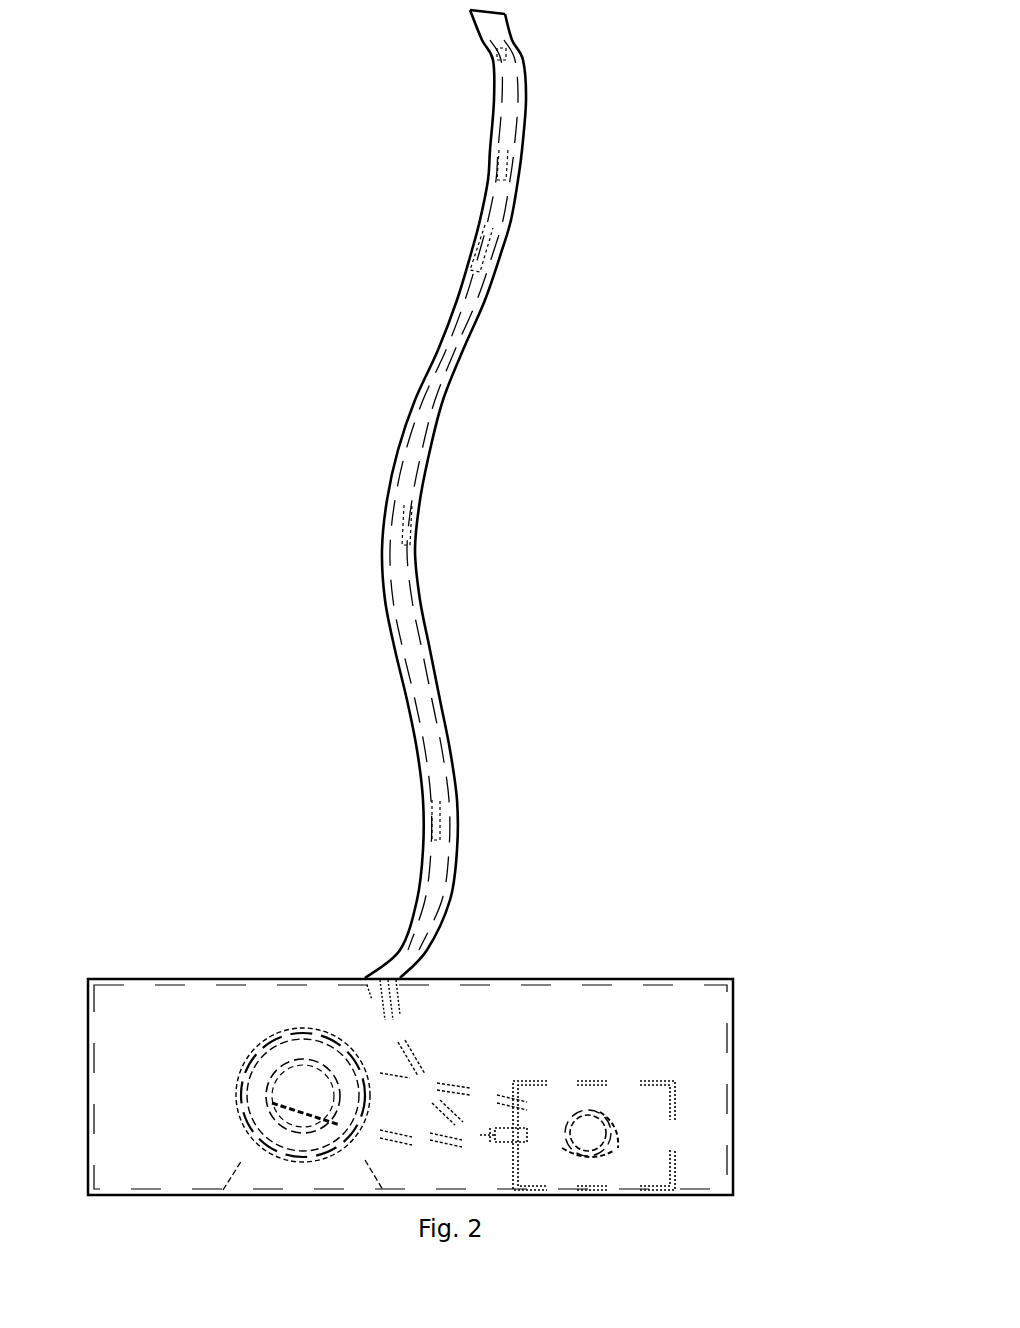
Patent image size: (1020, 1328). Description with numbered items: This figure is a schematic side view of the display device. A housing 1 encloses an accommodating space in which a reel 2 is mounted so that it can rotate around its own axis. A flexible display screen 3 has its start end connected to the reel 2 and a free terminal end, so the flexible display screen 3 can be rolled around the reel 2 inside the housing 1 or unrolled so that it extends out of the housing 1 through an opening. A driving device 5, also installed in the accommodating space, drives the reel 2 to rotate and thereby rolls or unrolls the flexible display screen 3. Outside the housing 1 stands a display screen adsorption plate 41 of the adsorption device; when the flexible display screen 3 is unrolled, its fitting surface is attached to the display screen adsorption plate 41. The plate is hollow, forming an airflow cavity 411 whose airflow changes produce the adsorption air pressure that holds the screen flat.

The housing 1 is at (530, 1005).
The reel 2 is at (275, 1063).
The flexible display screen 3 is at (478, 215).
The driving device 5 is at (633, 1115).
The display screen adsorption plate 41 is at (530, 72).
The airflow cavity 411 is at (486, 263).